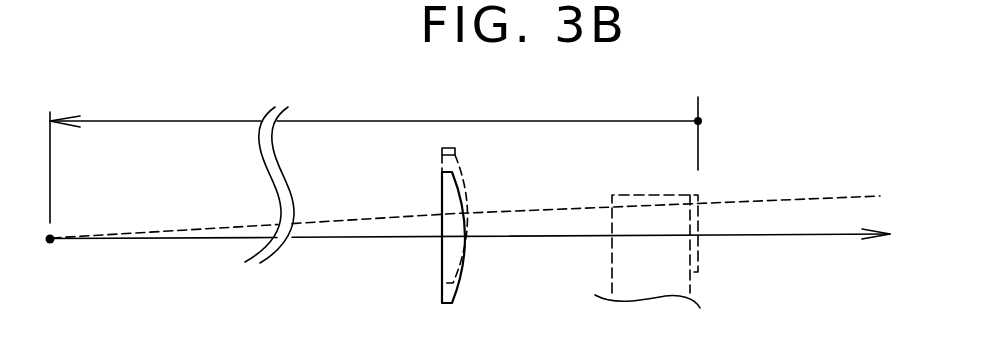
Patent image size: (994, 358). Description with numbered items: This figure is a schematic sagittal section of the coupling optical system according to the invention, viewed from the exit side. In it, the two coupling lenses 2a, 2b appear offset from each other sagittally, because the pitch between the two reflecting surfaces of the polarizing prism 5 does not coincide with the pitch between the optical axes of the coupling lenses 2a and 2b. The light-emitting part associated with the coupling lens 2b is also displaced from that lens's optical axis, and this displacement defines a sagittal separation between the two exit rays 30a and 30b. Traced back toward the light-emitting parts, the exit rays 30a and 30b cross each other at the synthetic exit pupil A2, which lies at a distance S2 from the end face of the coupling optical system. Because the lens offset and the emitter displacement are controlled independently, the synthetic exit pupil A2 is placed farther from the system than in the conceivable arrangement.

The coupling lens 2a is at (452, 292).
The coupling lens 2b is at (455, 150).
The polarizing prism 5 is at (645, 196).
The exit ray 30a is at (793, 239).
The exit ray 30b is at (803, 196).
The synthetic exit pupil A2 is at (53, 259).
The distance to synthetic exit pupil S2 is at (376, 155).